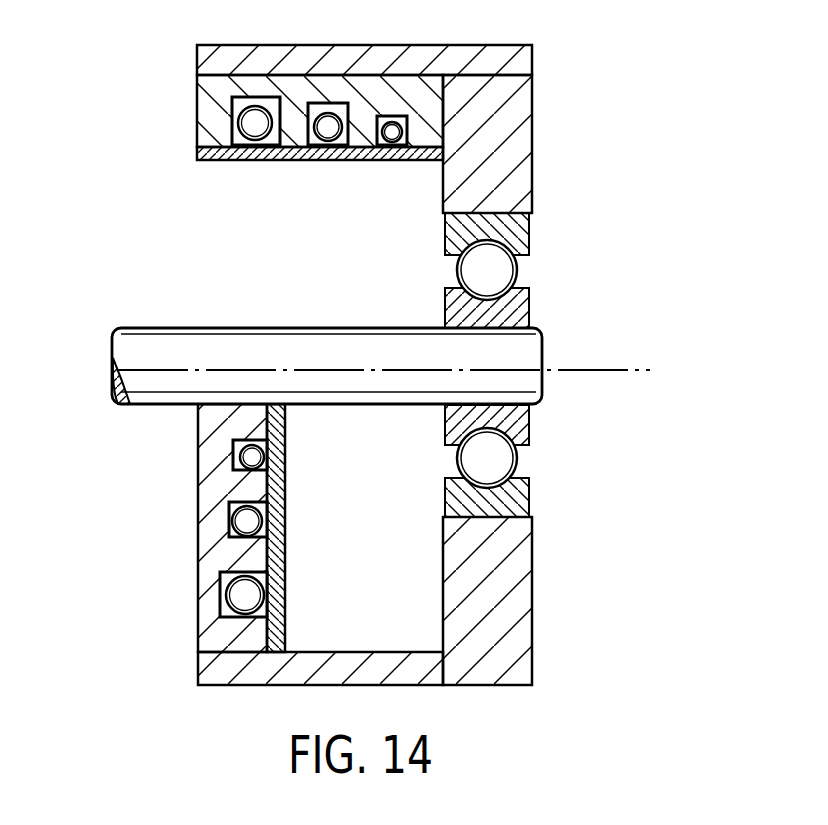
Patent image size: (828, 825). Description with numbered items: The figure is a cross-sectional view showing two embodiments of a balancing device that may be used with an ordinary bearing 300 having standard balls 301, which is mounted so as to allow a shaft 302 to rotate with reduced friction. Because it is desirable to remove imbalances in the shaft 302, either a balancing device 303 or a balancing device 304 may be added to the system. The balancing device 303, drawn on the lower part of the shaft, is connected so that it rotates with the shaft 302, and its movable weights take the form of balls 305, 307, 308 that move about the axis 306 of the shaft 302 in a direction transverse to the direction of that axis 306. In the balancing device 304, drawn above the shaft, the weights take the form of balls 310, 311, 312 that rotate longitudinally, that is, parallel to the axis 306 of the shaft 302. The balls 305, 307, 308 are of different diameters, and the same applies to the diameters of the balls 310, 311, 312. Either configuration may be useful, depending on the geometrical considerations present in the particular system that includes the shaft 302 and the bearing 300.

The bearing 300 is at (512, 228).
The standard balls 301 is at (487, 272).
The shaft 302 is at (210, 338).
The balancing device 303 is at (184, 546).
The balancing device 304 is at (182, 112).
The ball 305 is at (255, 459).
The axis 306 is at (565, 368).
The ball 307 is at (252, 522).
The ball 308 is at (248, 597).
The ball 310 is at (254, 130).
The ball 311 is at (328, 133).
The ball 312 is at (393, 140).